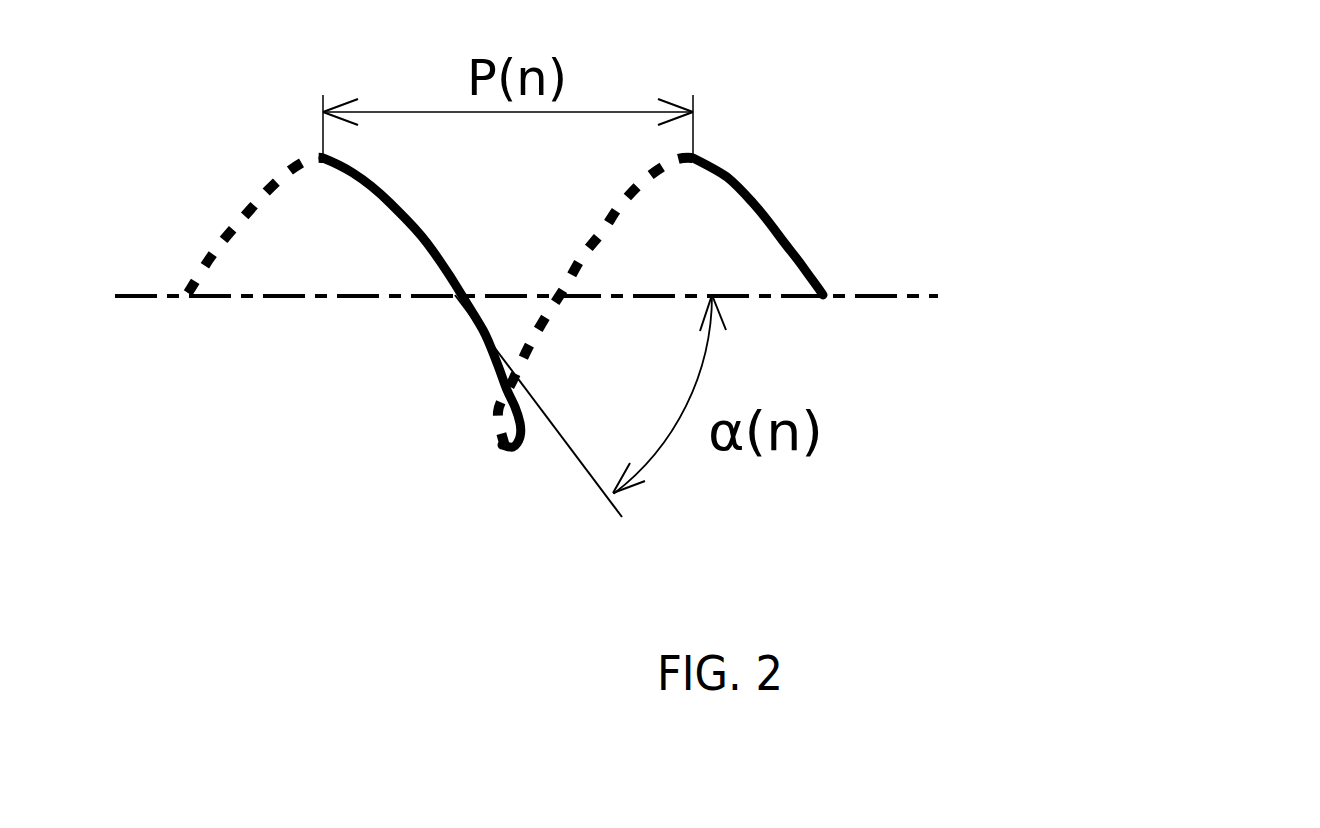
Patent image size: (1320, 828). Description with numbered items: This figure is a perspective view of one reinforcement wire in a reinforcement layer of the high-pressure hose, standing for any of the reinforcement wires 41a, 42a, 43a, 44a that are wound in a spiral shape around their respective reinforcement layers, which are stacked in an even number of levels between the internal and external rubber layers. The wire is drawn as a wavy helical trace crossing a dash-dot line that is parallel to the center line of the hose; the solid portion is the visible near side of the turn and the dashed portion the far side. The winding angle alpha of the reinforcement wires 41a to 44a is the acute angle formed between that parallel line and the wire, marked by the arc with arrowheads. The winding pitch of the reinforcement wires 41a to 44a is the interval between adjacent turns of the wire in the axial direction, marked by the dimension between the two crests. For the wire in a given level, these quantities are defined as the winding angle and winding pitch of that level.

The reinforcement wire 41a is at (735, 257).
The reinforcement wire 42a is at (735, 257).
The reinforcement wire 43a is at (735, 257).
The reinforcement wire 44a is at (767, 192).